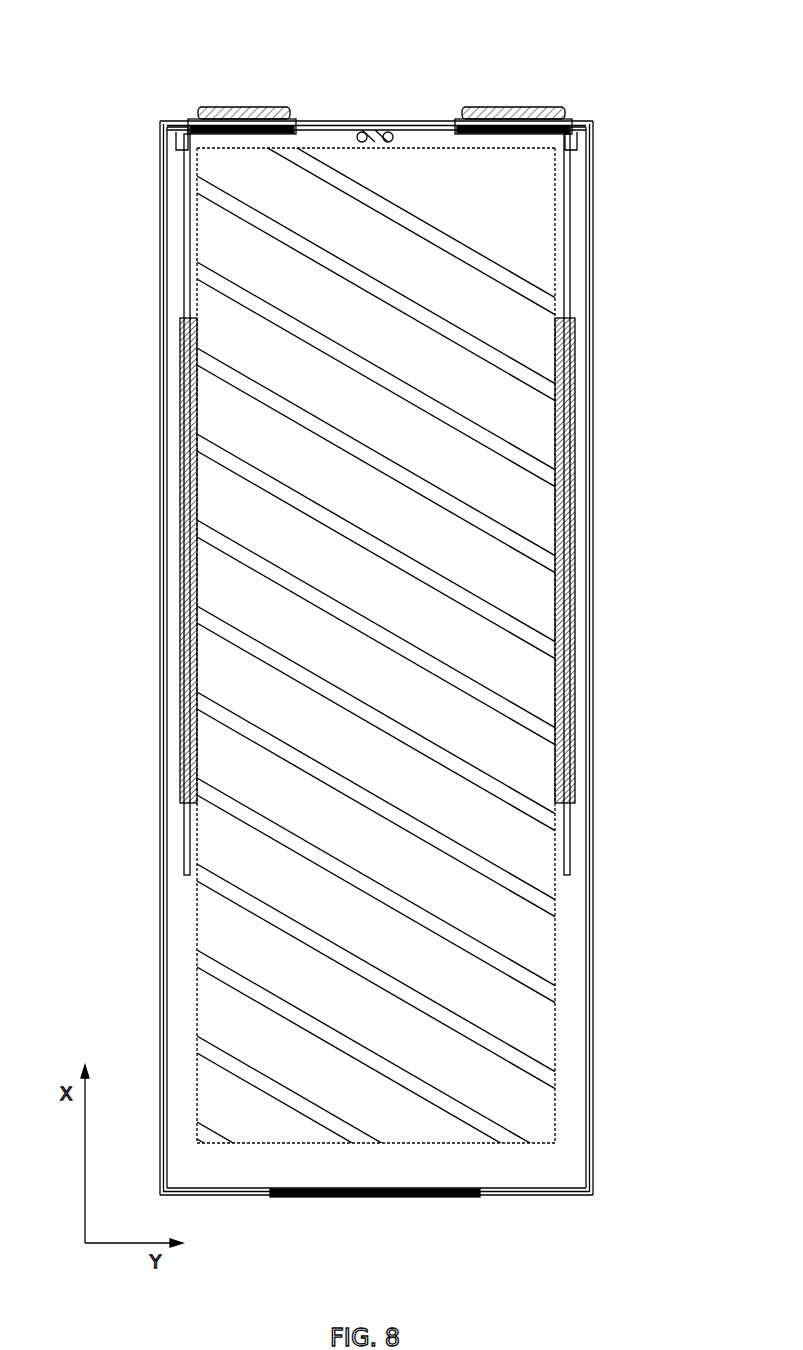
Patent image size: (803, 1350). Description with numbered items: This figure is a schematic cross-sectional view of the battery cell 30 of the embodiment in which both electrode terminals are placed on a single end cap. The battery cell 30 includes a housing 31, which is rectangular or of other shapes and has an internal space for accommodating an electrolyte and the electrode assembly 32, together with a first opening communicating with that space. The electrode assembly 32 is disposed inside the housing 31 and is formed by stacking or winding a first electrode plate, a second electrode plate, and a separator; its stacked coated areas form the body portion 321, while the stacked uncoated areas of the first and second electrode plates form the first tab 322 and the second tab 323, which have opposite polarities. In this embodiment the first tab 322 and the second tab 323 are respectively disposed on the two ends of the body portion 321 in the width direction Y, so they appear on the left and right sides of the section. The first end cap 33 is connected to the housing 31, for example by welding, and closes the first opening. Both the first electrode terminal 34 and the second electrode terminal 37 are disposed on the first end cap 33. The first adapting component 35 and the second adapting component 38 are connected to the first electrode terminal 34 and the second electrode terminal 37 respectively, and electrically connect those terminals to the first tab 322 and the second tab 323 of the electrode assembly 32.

The battery cell 30 is at (116, 41).
The housing 31 is at (162, 285).
The electrode assembly 32 is at (522, 1160).
The first end cap 33 is at (340, 120).
The first electrode terminal 34 is at (218, 108).
The first adapting component 35 is at (185, 212).
The second electrode terminal 37 is at (525, 108).
The second adapting component 38 is at (572, 212).
The body portion 321 is at (450, 978).
The first tab 322 is at (186, 682).
The second tab 323 is at (574, 688).